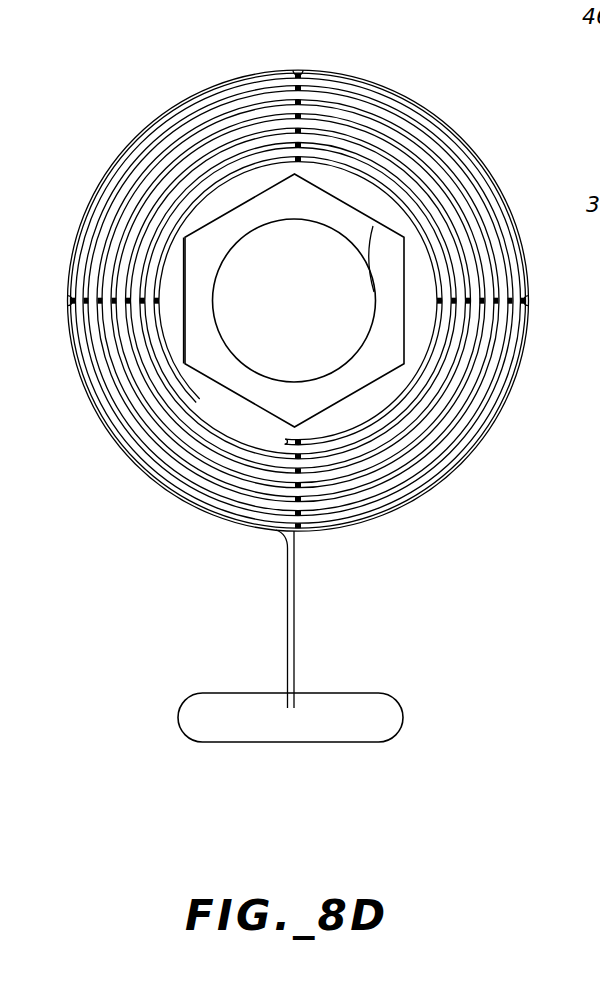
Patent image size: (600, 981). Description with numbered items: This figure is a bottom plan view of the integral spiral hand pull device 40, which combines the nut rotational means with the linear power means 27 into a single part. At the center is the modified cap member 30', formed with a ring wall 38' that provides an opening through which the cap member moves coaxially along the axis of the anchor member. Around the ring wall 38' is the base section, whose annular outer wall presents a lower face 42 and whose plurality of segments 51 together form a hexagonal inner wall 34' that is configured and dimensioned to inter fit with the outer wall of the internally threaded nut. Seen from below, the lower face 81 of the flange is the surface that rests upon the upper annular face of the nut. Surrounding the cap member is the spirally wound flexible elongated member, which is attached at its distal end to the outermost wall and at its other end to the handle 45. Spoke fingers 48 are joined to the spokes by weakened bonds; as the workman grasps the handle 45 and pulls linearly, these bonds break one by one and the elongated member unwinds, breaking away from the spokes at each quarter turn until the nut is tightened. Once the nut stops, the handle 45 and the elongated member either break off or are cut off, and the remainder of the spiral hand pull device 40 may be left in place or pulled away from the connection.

The integral spiral hand pull device 40 is at (120, 82).
The spoke fingers 48 is at (292, 66).
The modified cap member 30' is at (298, 300).
The lower face 42 is at (418, 330).
The lower face of flange 81 is at (248, 381).
The hexagonal inner wall 34' is at (294, 300).
The segments 51 is at (401, 254).
The ring wall 38' is at (294, 300).
The linear power means 27 is at (305, 620).
The handle 45 is at (372, 693).